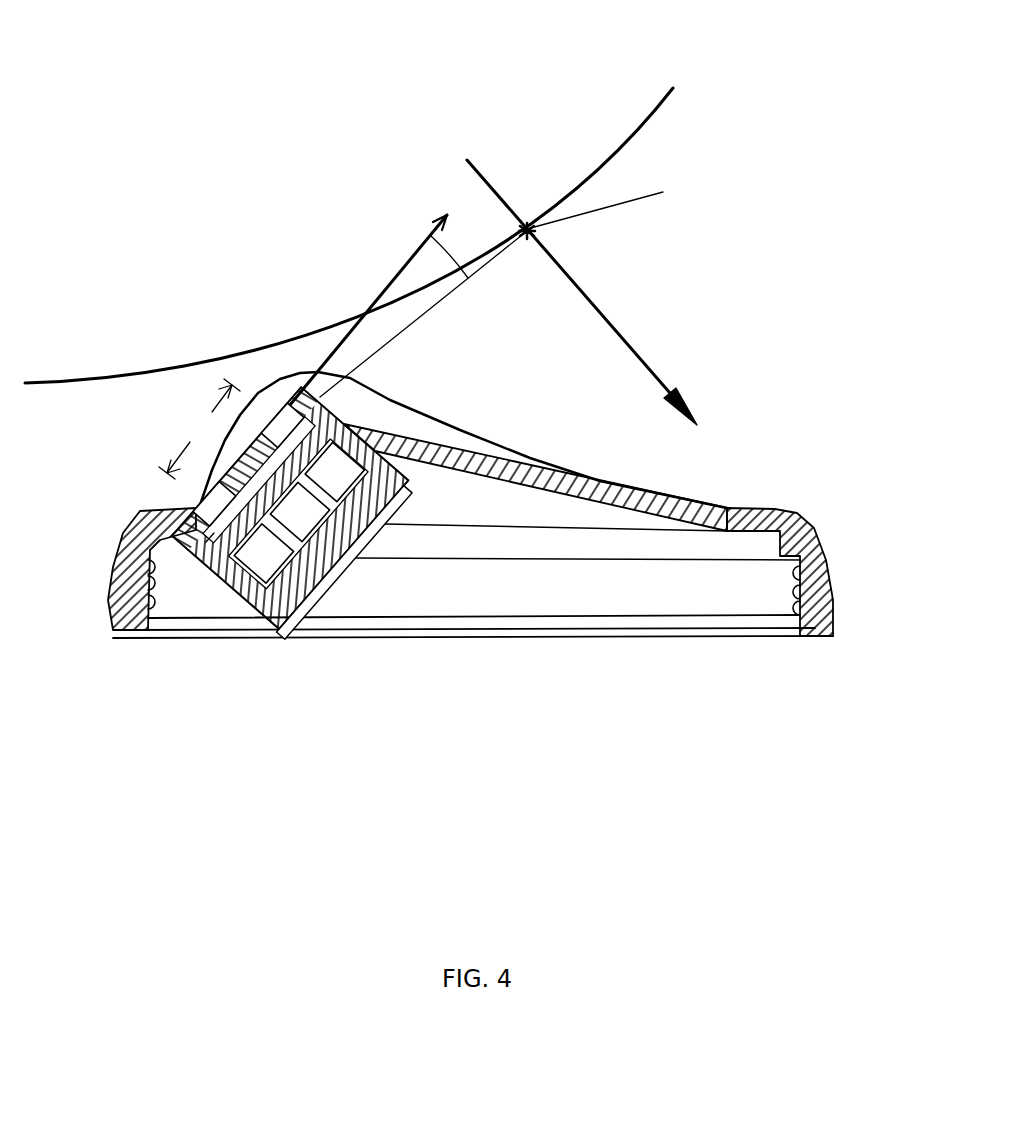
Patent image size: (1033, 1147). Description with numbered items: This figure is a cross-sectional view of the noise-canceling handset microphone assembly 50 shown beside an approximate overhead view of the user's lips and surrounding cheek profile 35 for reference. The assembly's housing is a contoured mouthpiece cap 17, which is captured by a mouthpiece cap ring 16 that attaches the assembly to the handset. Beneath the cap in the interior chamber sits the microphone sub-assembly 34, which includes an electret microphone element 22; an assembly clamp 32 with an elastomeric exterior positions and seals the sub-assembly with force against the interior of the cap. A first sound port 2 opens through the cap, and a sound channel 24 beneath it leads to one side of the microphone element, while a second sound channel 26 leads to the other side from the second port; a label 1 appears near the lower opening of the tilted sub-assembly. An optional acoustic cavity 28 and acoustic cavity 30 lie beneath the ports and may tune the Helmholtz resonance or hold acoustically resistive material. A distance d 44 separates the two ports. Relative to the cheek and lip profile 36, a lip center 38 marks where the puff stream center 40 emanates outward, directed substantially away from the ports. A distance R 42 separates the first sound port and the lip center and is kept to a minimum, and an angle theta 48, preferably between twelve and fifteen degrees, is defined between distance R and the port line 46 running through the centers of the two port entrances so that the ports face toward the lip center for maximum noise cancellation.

The first window 1 is at (205, 493).
The first sound port 2 is at (283, 416).
The mouthpiece cap ring 16 is at (838, 586).
The contoured mouthpiece cap 17 is at (613, 490).
The microphone element 22 is at (299, 511).
The sound channel 24 is at (334, 471).
The sound channel 26 is at (263, 553).
The acoustic cavity 28 is at (305, 440).
The acoustic cavity 30 is at (206, 542).
The assembly clamp 32 is at (343, 574).
The microphone sub-assembly 34 is at (259, 612).
The lips and surrounding cheek profile 35 is at (217, 102).
The cheek and lip profile 36 is at (64, 378).
The lip center 38 is at (610, 206).
The puff stream center 40 is at (653, 369).
The distance R 42 is at (420, 337).
The distance d 44 is at (186, 435).
The port line 46 is at (398, 254).
The angle θ 48 is at (471, 219).
The noise-canceling handset microphone assembly 50 is at (510, 650).